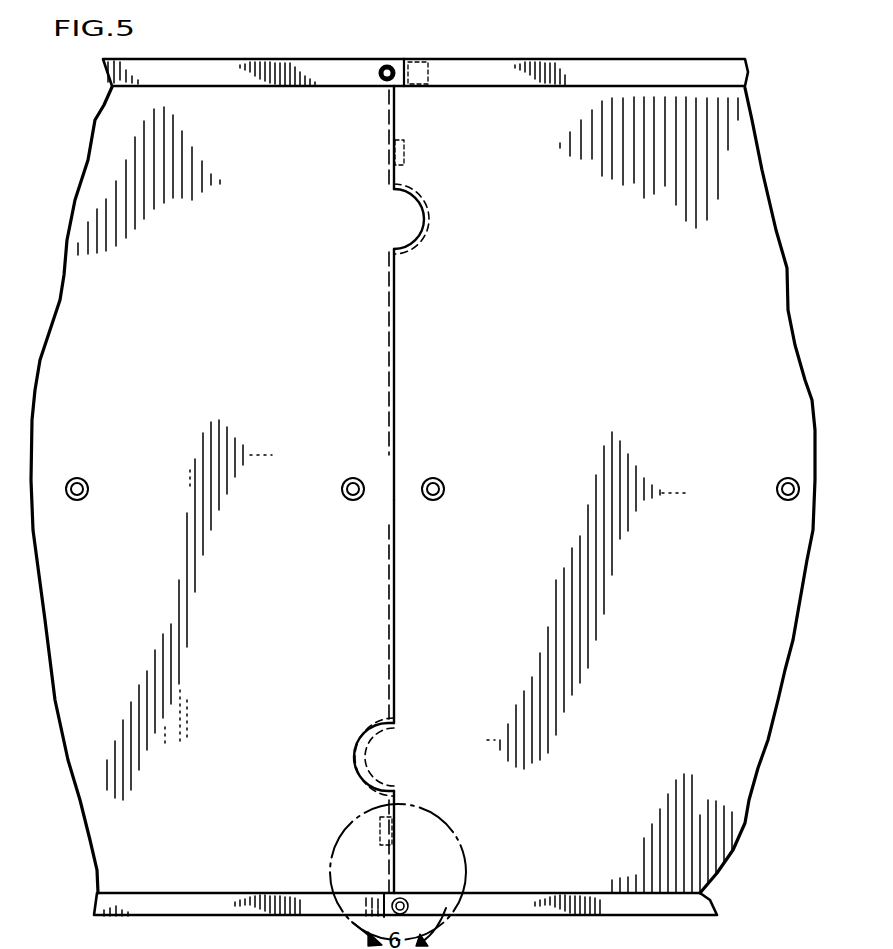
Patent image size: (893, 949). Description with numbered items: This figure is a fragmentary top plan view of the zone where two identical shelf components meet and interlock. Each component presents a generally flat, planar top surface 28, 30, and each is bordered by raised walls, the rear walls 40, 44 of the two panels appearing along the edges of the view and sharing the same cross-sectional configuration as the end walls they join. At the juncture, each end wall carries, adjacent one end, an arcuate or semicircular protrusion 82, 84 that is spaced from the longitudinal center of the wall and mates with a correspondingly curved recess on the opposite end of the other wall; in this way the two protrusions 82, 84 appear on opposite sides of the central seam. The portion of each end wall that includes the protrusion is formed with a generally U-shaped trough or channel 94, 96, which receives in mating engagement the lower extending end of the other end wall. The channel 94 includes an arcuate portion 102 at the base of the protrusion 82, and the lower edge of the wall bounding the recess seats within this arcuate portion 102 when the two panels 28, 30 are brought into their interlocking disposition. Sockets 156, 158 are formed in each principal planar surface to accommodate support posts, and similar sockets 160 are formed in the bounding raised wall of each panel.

The top surface 28 is at (107, 811).
The top surface 30 is at (697, 775).
The rear wall 40 is at (215, 78).
The rear wall 44 is at (554, 76).
The protrusion 82 is at (382, 757).
The protrusion 84 is at (406, 225).
The channel 94 is at (388, 645).
The channel 96 is at (395, 303).
The arcuate portion 102 is at (366, 782).
The socket 156 is at (77, 478).
The socket 158 is at (348, 478).
The socket 160 is at (381, 80).